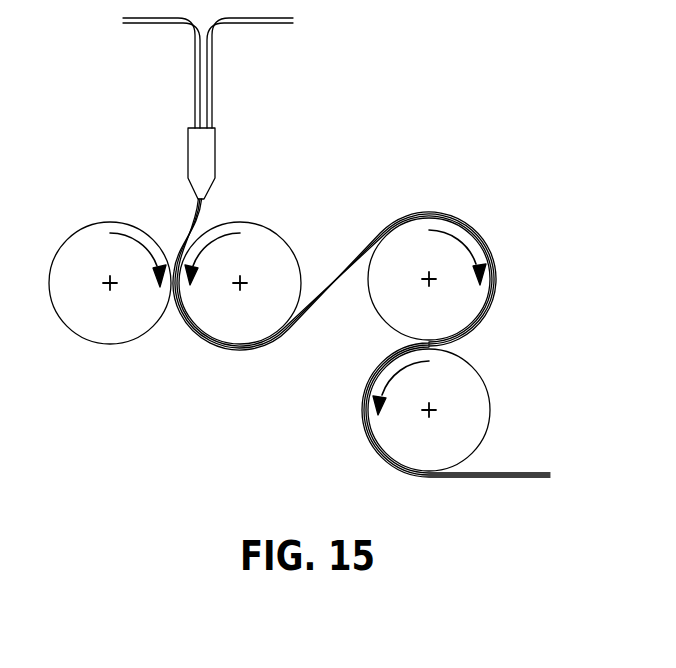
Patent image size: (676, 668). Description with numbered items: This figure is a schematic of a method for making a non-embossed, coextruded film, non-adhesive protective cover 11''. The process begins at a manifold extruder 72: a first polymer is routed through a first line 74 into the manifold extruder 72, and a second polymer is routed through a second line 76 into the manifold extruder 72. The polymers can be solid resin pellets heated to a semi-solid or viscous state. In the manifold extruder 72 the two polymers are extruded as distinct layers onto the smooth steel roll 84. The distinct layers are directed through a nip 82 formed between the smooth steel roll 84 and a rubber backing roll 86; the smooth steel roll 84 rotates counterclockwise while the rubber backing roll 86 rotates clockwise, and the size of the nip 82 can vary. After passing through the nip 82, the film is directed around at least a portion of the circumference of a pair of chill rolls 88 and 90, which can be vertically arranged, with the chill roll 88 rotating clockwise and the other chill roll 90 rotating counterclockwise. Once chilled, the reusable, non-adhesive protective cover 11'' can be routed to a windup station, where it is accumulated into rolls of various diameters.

The manifold extruder 72 is at (197, 164).
The first line 74 is at (212, 77).
The second line 76 is at (196, 71).
The nip 82 is at (173, 334).
The smooth steel roll 84 is at (247, 243).
The rubber backing roll 86 is at (78, 303).
The chill roll 88 is at (453, 290).
The chill roll 90 is at (448, 390).
The non-embossed, coextruded film, non-adhesive protective cover 11'' is at (385, 338).